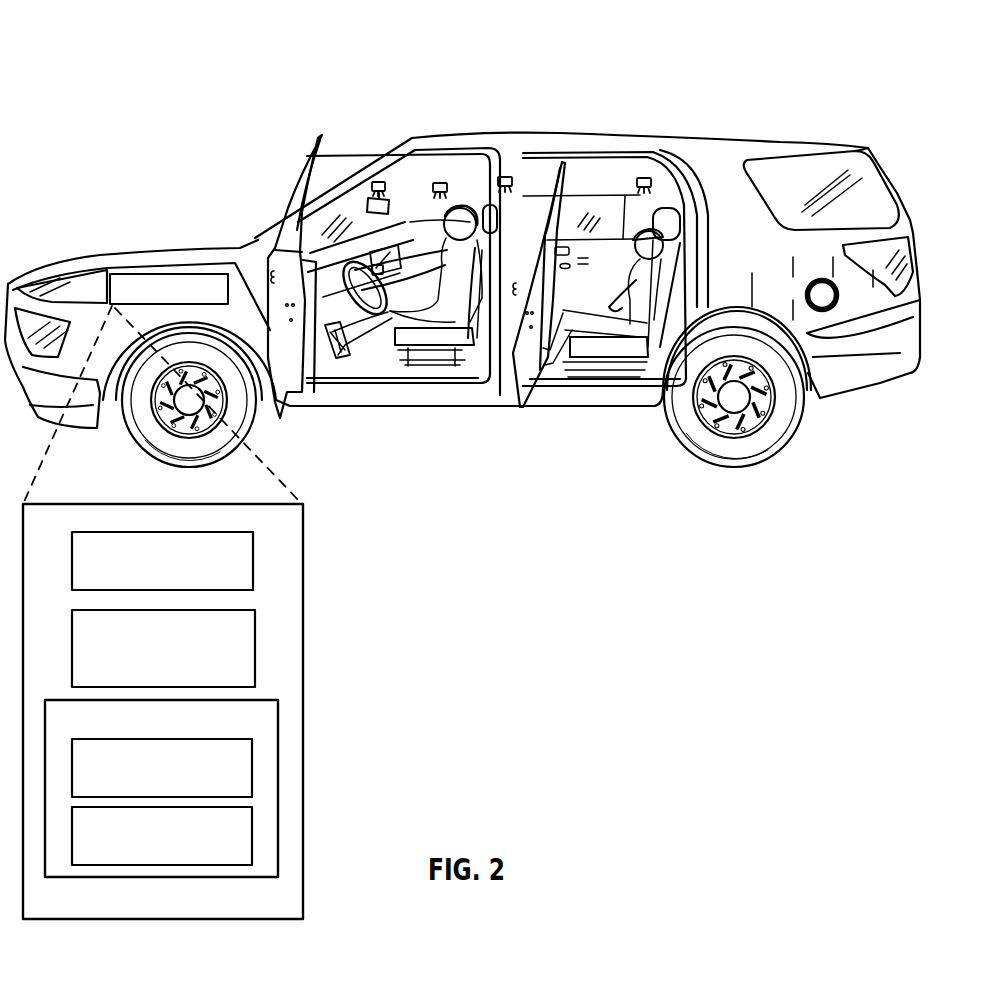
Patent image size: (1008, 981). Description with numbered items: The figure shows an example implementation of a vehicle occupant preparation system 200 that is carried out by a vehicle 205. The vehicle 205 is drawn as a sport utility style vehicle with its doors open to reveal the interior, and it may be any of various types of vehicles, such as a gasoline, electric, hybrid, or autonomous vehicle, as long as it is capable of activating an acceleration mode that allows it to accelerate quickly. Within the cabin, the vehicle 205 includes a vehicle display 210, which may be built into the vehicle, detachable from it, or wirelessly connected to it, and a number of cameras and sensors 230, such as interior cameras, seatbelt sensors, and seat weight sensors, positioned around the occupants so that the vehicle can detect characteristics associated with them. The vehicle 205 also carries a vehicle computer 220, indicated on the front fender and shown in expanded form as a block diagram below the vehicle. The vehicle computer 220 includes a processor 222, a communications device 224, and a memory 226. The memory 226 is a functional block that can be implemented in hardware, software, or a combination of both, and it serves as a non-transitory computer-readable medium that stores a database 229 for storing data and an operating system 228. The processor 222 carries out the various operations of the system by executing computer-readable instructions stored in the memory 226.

The vehicle occupant preparation system 200 is at (155, 50).
The vehicle 205 is at (725, 140).
The vehicle display 210 is at (388, 198).
The vehicle computer 220 is at (209, 596).
The processor 222 is at (253, 556).
The communications device 224 is at (255, 648).
The memory 226 is at (278, 716).
The operating system (OS) 228 is at (253, 844).
The database 229 is at (252, 777).
The sensors 230 is at (376, 182).